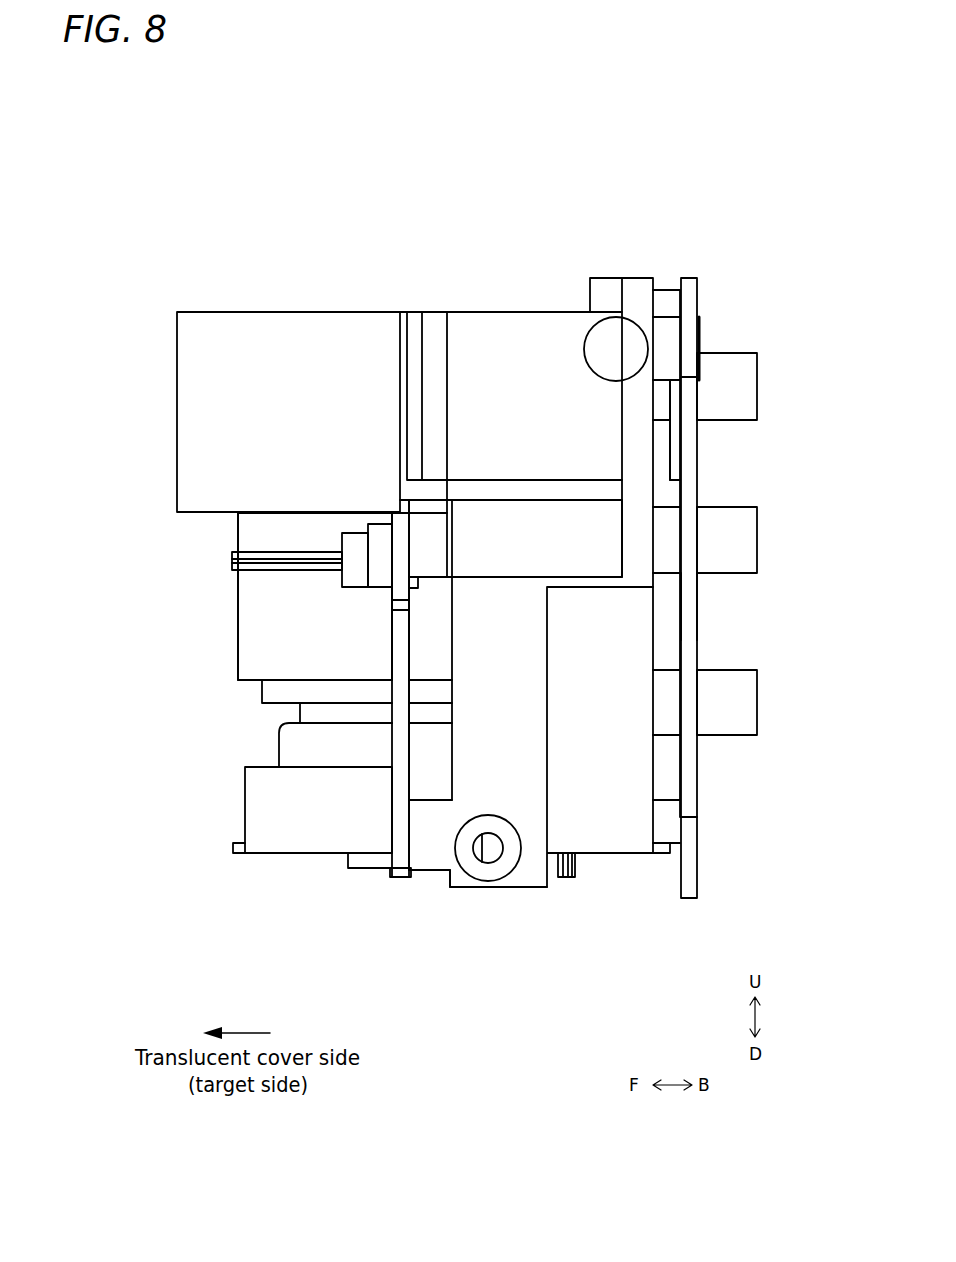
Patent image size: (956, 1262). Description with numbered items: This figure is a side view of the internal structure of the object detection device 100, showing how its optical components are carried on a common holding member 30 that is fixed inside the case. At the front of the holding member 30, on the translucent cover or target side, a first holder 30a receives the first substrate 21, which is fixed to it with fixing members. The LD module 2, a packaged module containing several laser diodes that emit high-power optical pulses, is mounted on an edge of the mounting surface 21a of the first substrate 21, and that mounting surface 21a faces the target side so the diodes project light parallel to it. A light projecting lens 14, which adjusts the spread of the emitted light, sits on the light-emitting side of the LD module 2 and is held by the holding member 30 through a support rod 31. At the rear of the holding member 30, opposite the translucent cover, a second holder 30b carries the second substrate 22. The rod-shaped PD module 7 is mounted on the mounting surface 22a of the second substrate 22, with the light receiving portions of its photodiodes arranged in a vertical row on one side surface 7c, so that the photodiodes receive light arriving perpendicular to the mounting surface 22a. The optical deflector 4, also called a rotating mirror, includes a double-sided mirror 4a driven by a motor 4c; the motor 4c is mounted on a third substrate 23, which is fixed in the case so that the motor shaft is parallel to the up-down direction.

The object detection device 100 is at (108, 170).
The holding member 30 is at (268, 312).
The first holder 30a is at (433, 500).
The second holder 30b is at (668, 315).
The PD module 7 is at (672, 468).
The side surface of PD module 7c is at (672, 468).
The second substrate 22 is at (690, 278).
The mounting surface of second substrate 22a is at (678, 592).
The optical deflector 4 is at (238, 527).
The double-sided mirror 4a is at (238, 527).
The motor 4c is at (279, 752).
The third substrate 23 is at (233, 848).
The support rod 31 is at (232, 562).
The light projecting lens 14 is at (342, 577).
The LD module 2 is at (380, 592).
The first substrate 21 is at (398, 880).
The mounting surface of first substrate 21a is at (392, 620).